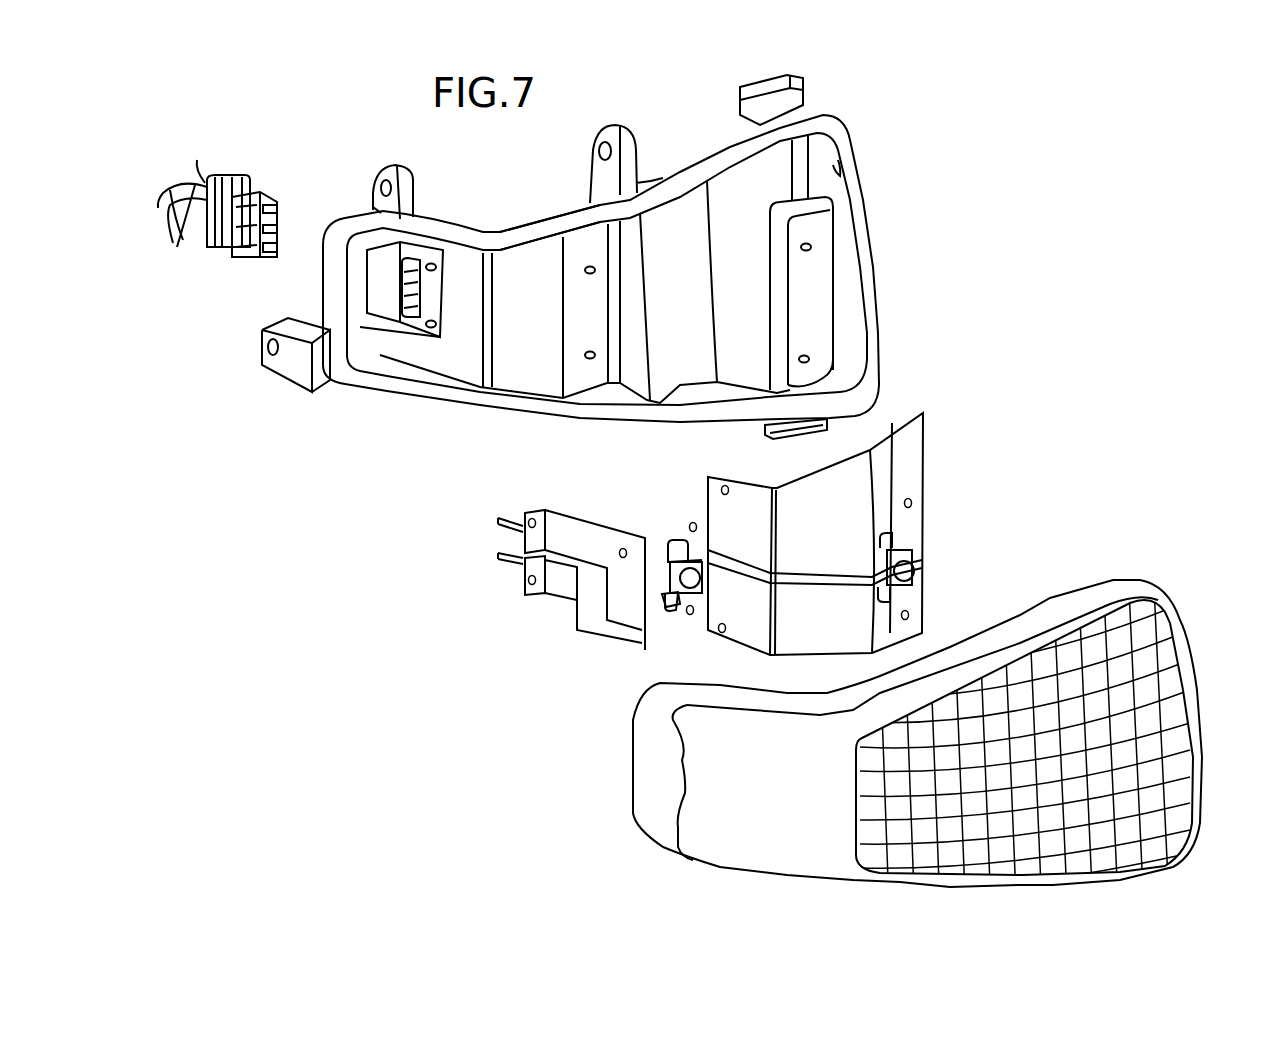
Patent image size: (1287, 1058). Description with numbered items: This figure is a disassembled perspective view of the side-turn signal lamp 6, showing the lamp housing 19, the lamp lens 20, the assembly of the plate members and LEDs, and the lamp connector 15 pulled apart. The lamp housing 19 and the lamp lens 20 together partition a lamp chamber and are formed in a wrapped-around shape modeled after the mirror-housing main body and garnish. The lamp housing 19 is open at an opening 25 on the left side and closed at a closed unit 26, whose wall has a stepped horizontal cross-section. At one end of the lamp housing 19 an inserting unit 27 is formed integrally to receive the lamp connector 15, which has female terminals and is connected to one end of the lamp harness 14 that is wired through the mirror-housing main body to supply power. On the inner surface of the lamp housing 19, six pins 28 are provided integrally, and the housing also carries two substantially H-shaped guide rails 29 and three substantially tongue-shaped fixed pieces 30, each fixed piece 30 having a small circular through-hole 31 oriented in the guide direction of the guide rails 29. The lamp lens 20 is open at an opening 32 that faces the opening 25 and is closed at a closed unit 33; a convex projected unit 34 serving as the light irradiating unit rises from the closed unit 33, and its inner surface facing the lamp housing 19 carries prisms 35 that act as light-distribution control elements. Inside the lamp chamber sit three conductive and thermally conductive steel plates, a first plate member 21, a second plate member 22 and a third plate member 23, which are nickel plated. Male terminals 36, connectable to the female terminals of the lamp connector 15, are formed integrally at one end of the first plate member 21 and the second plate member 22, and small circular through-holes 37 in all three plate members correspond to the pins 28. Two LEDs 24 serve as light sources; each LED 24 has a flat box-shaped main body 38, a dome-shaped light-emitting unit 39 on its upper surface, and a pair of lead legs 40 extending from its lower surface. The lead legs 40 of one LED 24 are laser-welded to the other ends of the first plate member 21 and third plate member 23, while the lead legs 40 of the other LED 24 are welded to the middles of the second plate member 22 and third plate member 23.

The side-turn signal lamp 6 is at (1000, 342).
The lamp harness 14 is at (182, 222).
The lamp connector 15 is at (279, 195).
The lamp housing 19 is at (880, 259).
The lamp lens 20 is at (1210, 741).
The first plate member 21 is at (572, 640).
The second plate member 22 is at (584, 512).
The third plate member 23 is at (937, 495).
The LED 24 is at (703, 565).
The opening 25 is at (838, 170).
The closed unit 26 is at (533, 228).
The inserting unit 27 is at (418, 290).
The pin 28 is at (410, 322).
The guide rail 29 is at (803, 86).
The fixed piece 30 is at (400, 177).
The through-hole 31 is at (383, 188).
The opening 32 is at (1043, 600).
The closed unit 33 is at (697, 775).
The projected unit 34 is at (1125, 600).
The prism 35 is at (1147, 687).
The male terminal 36 is at (512, 516).
The through-hole 37 is at (533, 518).
The main body 38 is at (668, 597).
The light-emitting unit 39 is at (690, 578).
The lead leg 40 is at (677, 550).